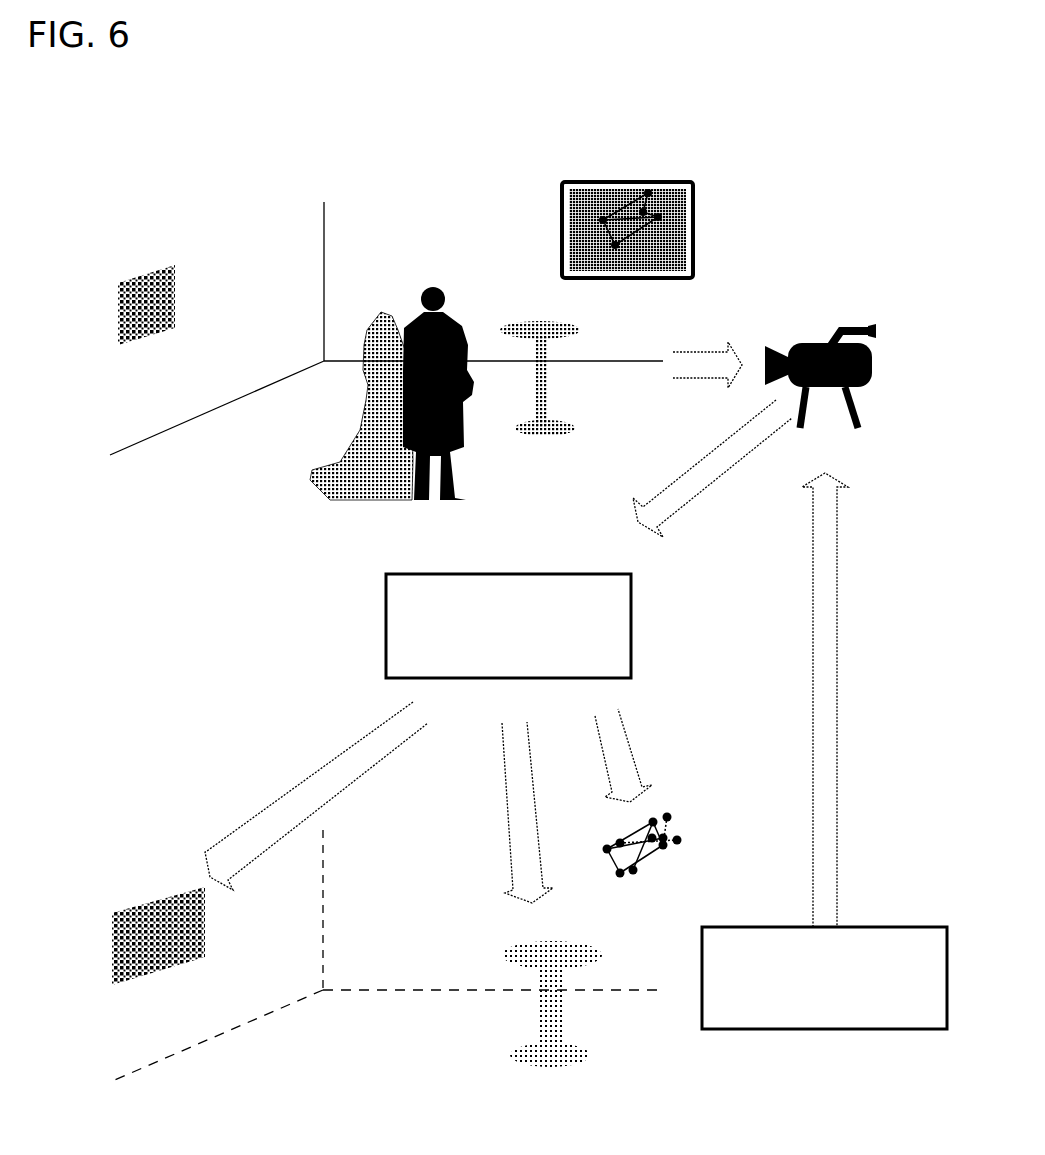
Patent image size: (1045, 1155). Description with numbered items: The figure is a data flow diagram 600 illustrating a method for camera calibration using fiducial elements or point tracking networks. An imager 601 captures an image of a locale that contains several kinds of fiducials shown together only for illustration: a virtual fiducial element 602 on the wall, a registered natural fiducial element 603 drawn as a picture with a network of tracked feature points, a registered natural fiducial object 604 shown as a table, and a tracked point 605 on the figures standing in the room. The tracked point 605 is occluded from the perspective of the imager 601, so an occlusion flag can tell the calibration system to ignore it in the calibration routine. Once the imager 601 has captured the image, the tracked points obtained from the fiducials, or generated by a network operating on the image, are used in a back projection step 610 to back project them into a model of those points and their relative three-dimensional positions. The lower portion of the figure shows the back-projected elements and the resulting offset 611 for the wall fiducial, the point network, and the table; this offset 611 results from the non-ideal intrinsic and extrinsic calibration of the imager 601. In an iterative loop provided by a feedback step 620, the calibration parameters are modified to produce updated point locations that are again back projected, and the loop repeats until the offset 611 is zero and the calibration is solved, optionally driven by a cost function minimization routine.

The data flow diagram 600 is at (113, 131).
The imager 601 is at (840, 342).
The virtual fiducial element 602 is at (112, 312).
The registered natural fiducial element 603 is at (562, 225).
The registered natural fiducial object 604 is at (580, 327).
The tracked point 605 is at (403, 323).
The back projection step 610 is at (508, 626).
The offset 611 is at (682, 862).
The feedback step 620 is at (847, 1009).